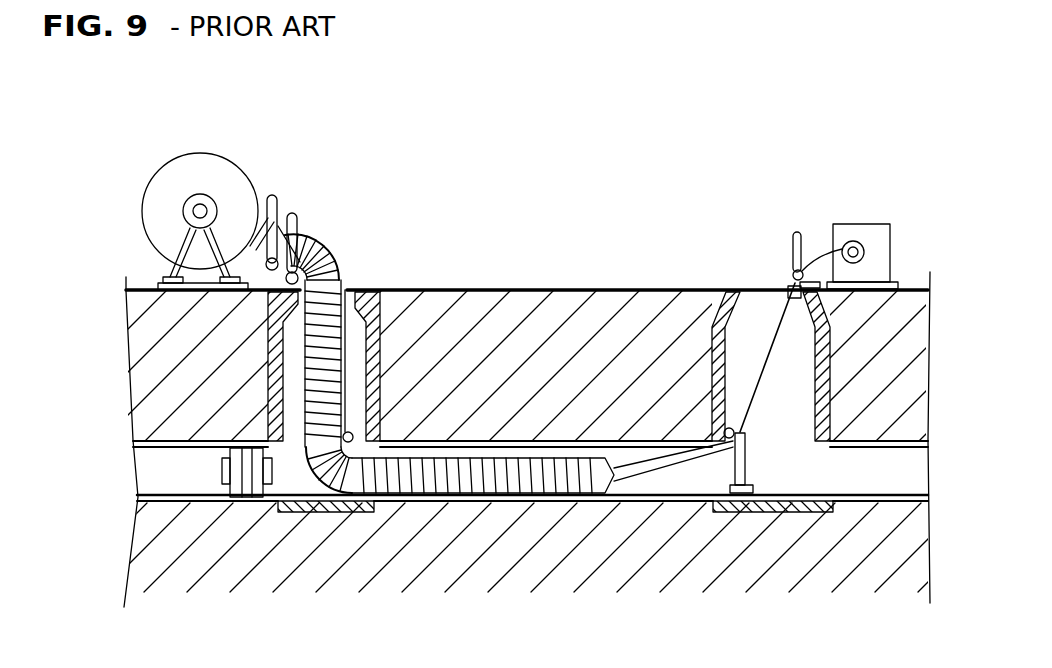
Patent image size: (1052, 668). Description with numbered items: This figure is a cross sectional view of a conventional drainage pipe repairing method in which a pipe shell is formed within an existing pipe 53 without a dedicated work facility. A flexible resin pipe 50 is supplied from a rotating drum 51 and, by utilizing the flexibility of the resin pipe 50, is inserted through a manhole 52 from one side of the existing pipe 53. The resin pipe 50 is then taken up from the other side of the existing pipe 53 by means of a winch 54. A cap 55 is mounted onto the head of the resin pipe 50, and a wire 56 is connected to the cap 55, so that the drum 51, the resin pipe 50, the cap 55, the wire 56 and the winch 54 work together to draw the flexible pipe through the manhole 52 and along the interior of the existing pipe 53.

The flexible resin pipe 50 is at (313, 237).
The rotating drum 51 is at (187, 150).
The manhole 52 is at (372, 292).
The existing pipe 53 is at (550, 440).
The winch 54 is at (870, 224).
The cap 55 is at (612, 500).
The wire 56 is at (678, 500).